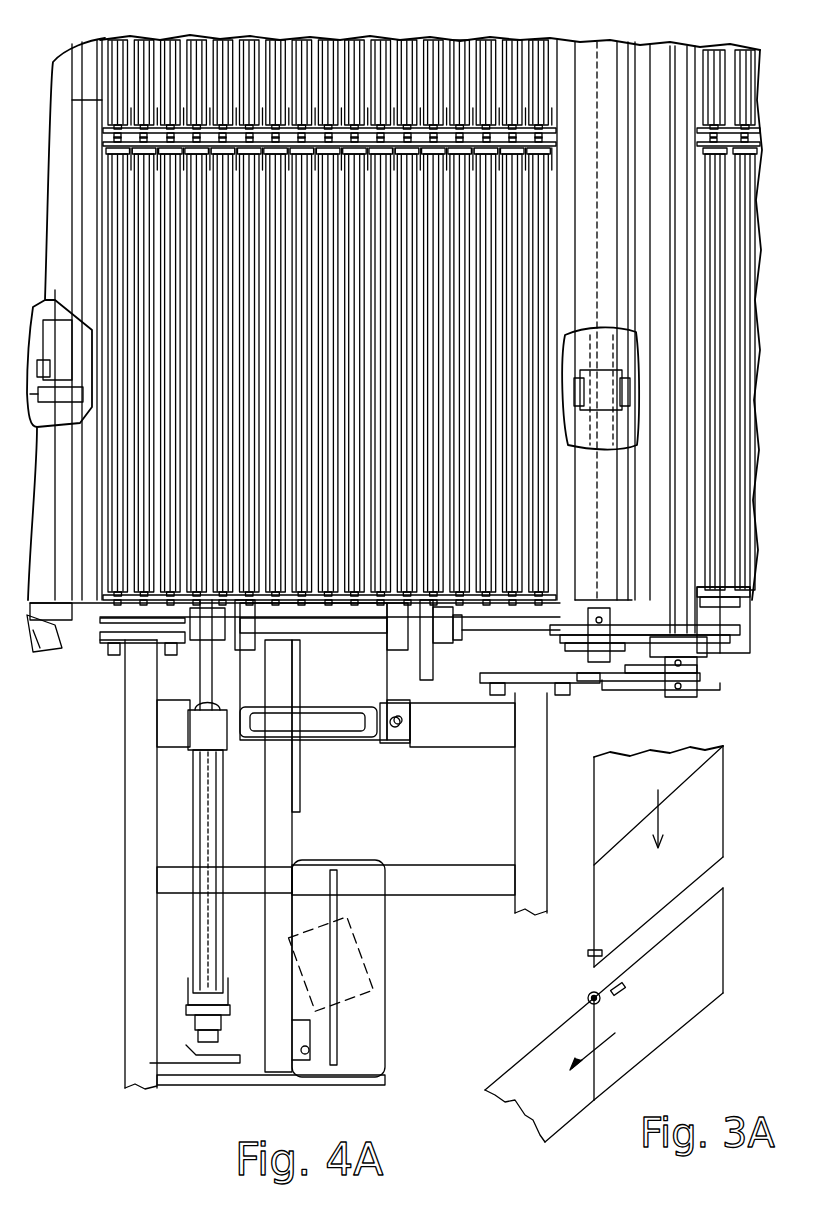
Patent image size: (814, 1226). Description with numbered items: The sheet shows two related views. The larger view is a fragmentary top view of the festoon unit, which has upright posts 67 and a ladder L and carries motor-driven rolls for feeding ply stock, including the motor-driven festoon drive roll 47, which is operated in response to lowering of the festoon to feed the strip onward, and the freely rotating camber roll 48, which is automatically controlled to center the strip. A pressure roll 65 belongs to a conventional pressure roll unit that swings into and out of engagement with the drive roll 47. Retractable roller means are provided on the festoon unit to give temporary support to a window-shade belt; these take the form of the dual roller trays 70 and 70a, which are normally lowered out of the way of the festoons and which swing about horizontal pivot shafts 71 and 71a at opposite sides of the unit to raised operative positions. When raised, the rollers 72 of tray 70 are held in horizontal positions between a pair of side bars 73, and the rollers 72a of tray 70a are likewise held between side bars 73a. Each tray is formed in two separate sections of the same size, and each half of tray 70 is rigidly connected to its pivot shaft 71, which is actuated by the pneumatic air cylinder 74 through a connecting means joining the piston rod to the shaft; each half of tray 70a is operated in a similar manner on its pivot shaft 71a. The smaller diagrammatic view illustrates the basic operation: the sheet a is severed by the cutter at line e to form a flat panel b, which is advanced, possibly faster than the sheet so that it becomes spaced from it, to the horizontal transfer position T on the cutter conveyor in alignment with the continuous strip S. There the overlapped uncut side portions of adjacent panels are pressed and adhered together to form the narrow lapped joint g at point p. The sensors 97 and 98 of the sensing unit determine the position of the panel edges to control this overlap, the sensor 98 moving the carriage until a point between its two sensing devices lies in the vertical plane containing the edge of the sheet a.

In FIG. 4A, the rollers 72 is at (143, 42).
In FIG. 4A, the side bars 73 is at (120, 127).
In FIG. 4A, the retractable dual roller tray 70 is at (108, 209).
In FIG. 4A, the pressure roll 65 is at (617, 65).
In FIG. 4A, the rollers 72a is at (717, 52).
In FIG. 4A, the side bars 73a is at (665, 133).
In FIG. 4A, the retractable dual roller tray 70a is at (705, 210).
In FIG. 4A, the drive roll 47 is at (640, 483).
In FIG. 4A, the camber roll 48 is at (42, 588).
In FIG. 4A, the pivot shaft 71 is at (340, 628).
In FIG. 4A, the upright posts 67 is at (295, 717).
In FIG. 4A, the pivot shaft 71a is at (745, 592).
In FIG. 4A, the air cylinder 74 is at (222, 958).
In FIG. 4A, the ladder L is at (125, 962).
In FIG. 3A, the sheet a is at (594, 787).
In FIG. 3A, the cutting line e is at (668, 800).
In FIG. 3A, the panel b is at (594, 930).
In FIG. 3A, the sensor 98 is at (588, 953).
In FIG. 3A, the sensor 97 is at (628, 975).
In FIG. 3A, the pivot point p is at (588, 997).
In FIG. 3A, the continuous strip S is at (532, 1050).
In FIG. 3A, the transfer position T is at (632, 1074).
In FIG. 3A, the lapped joint g is at (592, 1082).